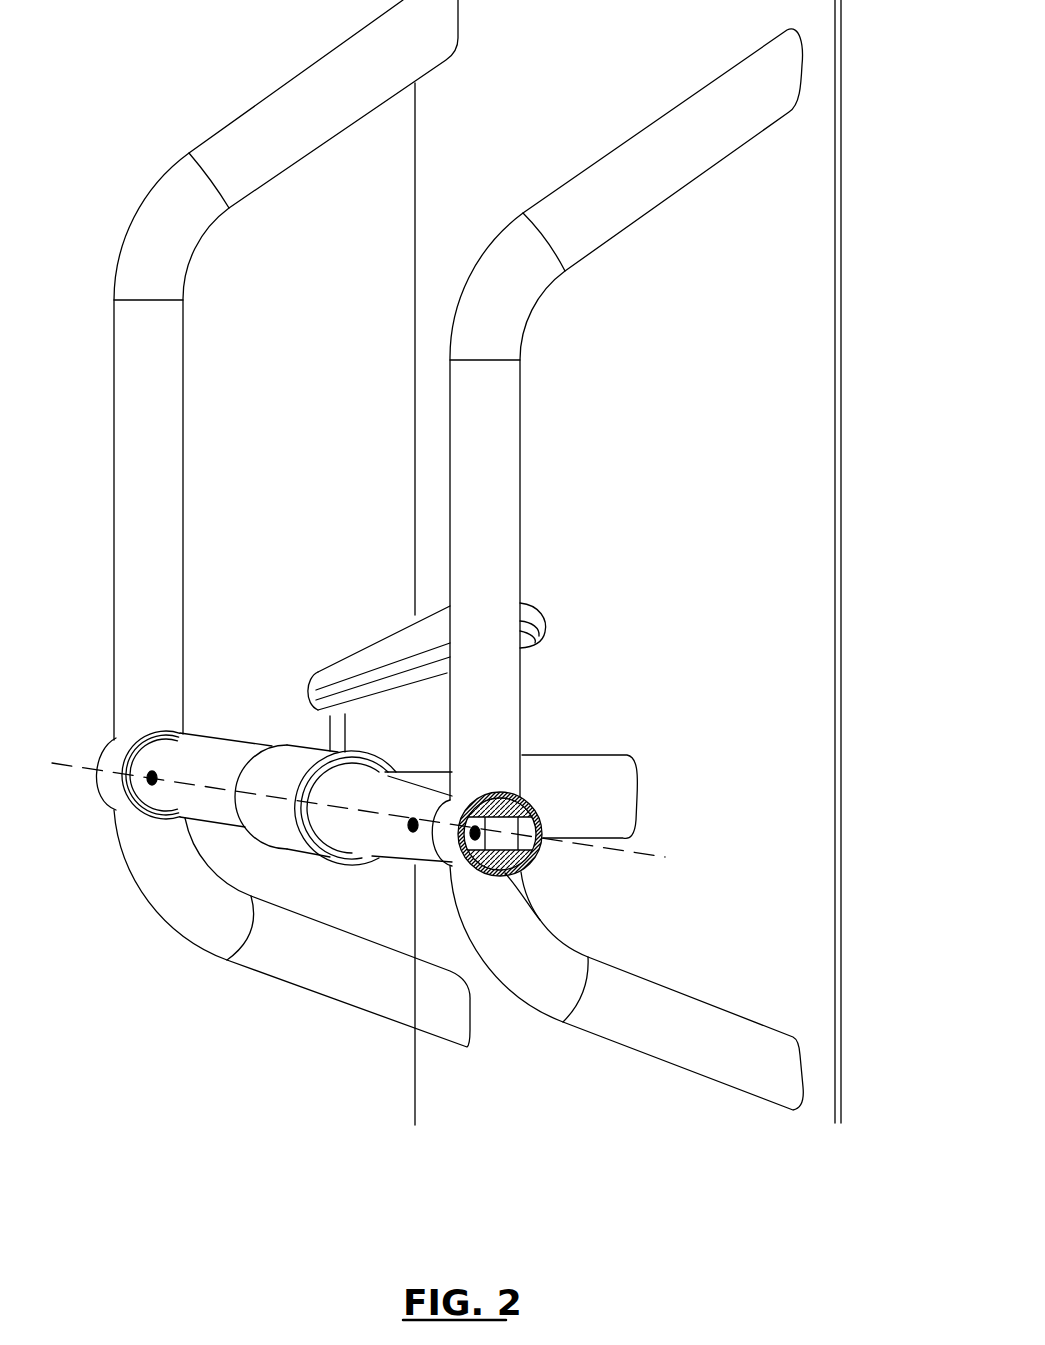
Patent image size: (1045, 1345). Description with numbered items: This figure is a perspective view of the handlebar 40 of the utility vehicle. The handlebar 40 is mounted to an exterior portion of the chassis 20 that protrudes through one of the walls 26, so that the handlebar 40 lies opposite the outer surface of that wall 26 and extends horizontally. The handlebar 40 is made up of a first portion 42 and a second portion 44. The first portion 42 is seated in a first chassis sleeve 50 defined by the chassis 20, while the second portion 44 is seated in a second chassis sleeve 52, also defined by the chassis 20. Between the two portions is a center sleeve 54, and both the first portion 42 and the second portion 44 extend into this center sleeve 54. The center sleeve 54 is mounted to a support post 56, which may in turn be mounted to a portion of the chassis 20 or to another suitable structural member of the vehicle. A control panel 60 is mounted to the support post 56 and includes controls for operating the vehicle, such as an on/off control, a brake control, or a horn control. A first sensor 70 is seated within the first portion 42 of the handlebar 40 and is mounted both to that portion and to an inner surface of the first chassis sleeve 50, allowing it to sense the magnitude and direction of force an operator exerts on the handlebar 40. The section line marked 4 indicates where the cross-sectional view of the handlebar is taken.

The chassis 20 is at (283, 120).
The wall 26 is at (800, 508).
The handlebar 40 is at (333, 813).
The first portion 42 is at (373, 823).
The second portion 44 is at (193, 797).
The first chassis sleeve 50 is at (443, 833).
The second chassis sleeve 52 is at (108, 752).
The center sleeve 54 is at (280, 793).
The support post 56 is at (563, 787).
The control panel 60 is at (373, 653).
The first sensor 70 is at (540, 920).
The section line 4- 4 is at (62, 765).